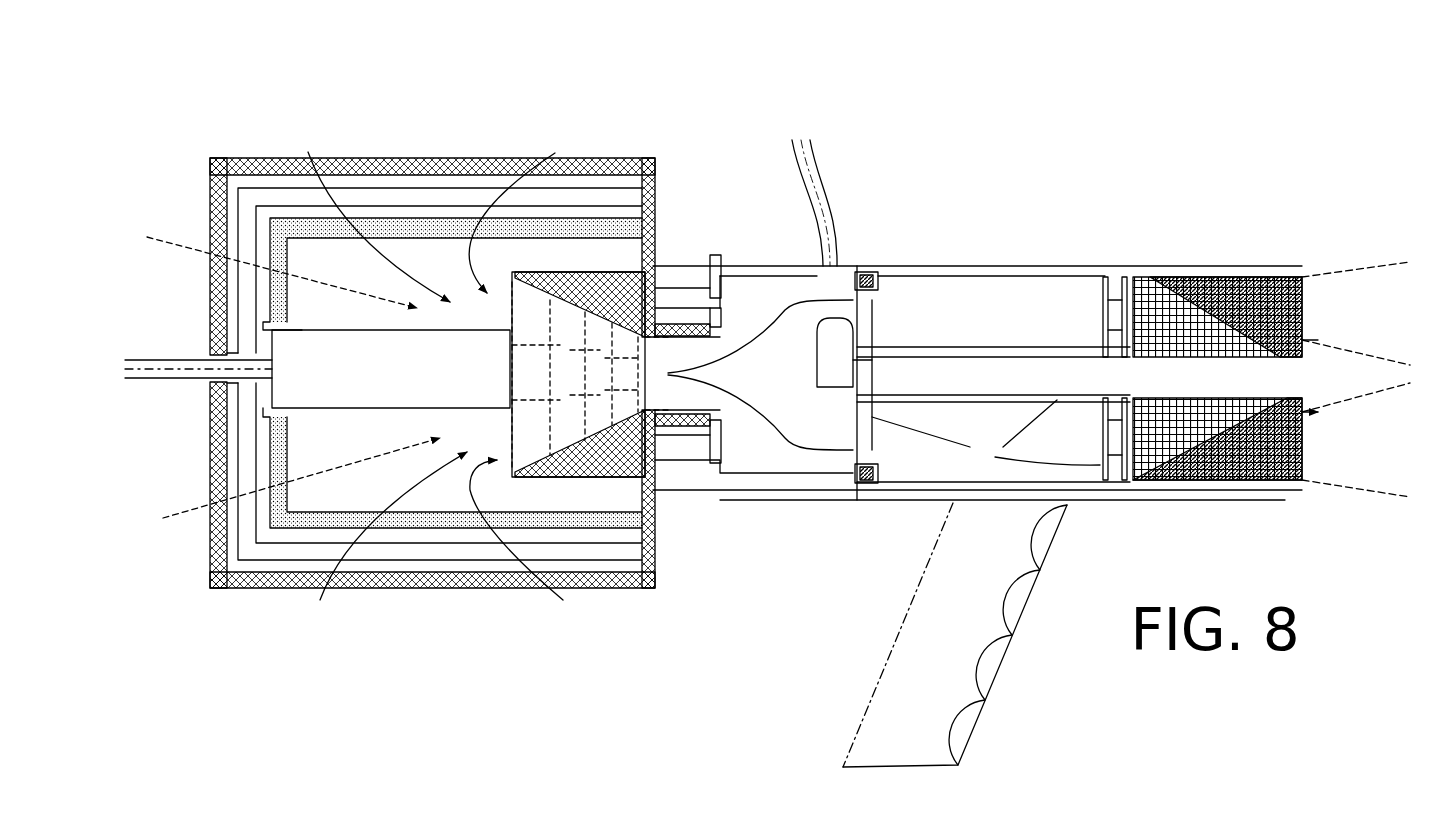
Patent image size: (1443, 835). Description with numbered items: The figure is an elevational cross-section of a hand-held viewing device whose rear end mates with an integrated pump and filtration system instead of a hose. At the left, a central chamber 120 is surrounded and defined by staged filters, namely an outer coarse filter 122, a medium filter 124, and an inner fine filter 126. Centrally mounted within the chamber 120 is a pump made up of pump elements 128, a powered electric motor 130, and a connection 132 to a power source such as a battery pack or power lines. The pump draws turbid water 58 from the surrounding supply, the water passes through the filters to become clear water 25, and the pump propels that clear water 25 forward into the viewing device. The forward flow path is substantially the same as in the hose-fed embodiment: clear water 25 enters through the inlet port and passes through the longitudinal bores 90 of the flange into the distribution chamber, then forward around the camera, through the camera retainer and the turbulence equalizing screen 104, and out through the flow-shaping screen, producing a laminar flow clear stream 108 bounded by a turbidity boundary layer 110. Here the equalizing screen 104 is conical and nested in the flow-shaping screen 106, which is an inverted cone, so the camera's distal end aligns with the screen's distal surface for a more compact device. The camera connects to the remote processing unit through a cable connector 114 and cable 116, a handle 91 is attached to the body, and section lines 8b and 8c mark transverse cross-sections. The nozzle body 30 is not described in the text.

The turbid water 58 is at (190, 505).
The connection 132 is at (155, 372).
The powered electric motor 130 is at (369, 384).
The central chamber 120 is at (311, 445).
The fine filter 126 is at (316, 521).
The medium filter 124 is at (283, 552).
The coarse filter 122 is at (386, 588).
The pump elements 128 is at (578, 374).
The nozzle body 30 is at (580, 443).
The longitudinal bores 90 is at (672, 450).
The clear water 25 is at (741, 345).
The cable 116 is at (820, 208).
The cable connector 114 is at (833, 383).
The section line 8b is at (867, 266).
The section line 8c is at (1130, 266).
The turbulence equalizing screen 104 is at (1217, 378).
The microfiber flow-shaping screen 106 is at (1306, 312).
The laminar flow clear stream 108 is at (1370, 356).
The turbidity boundary layer 110 is at (1385, 262).
The handle 91 is at (908, 625).